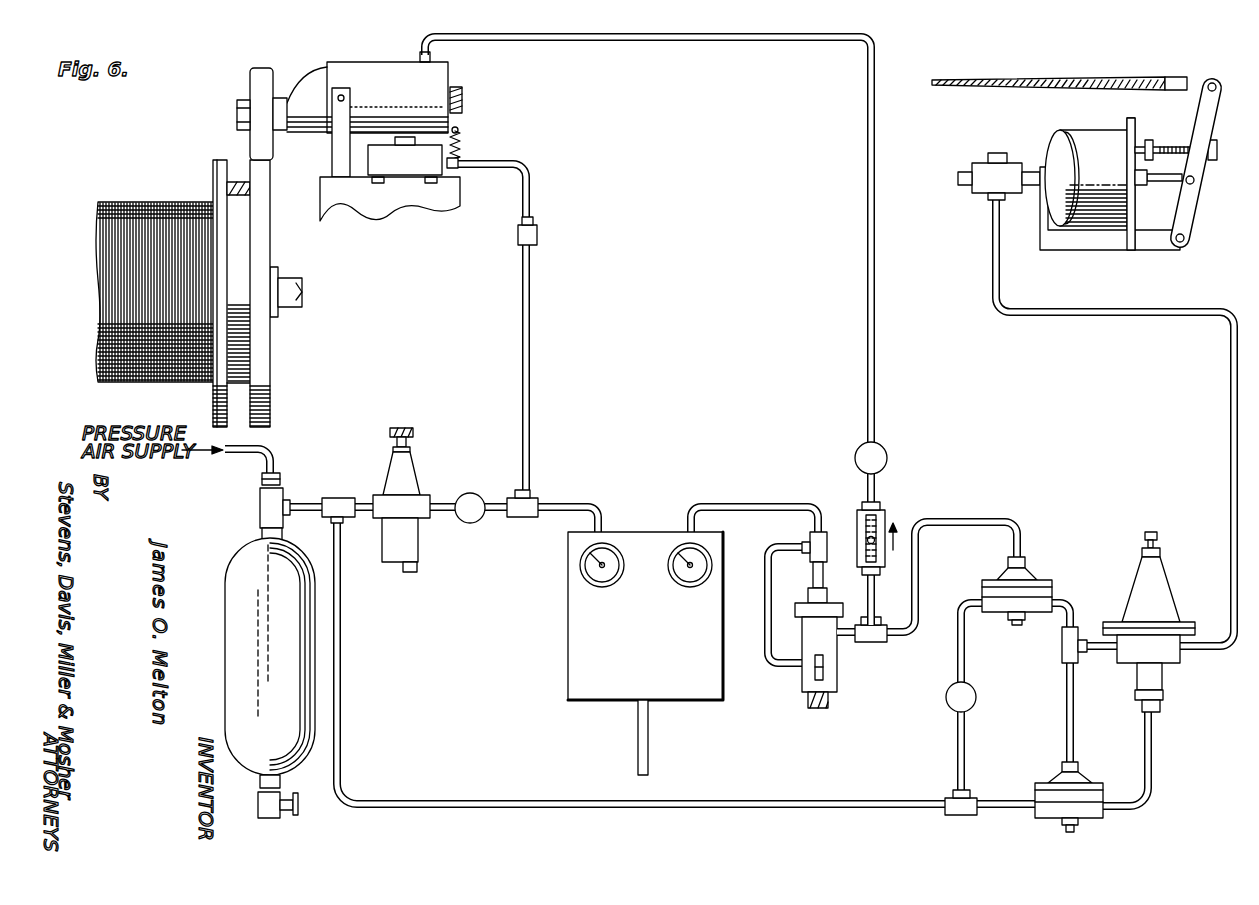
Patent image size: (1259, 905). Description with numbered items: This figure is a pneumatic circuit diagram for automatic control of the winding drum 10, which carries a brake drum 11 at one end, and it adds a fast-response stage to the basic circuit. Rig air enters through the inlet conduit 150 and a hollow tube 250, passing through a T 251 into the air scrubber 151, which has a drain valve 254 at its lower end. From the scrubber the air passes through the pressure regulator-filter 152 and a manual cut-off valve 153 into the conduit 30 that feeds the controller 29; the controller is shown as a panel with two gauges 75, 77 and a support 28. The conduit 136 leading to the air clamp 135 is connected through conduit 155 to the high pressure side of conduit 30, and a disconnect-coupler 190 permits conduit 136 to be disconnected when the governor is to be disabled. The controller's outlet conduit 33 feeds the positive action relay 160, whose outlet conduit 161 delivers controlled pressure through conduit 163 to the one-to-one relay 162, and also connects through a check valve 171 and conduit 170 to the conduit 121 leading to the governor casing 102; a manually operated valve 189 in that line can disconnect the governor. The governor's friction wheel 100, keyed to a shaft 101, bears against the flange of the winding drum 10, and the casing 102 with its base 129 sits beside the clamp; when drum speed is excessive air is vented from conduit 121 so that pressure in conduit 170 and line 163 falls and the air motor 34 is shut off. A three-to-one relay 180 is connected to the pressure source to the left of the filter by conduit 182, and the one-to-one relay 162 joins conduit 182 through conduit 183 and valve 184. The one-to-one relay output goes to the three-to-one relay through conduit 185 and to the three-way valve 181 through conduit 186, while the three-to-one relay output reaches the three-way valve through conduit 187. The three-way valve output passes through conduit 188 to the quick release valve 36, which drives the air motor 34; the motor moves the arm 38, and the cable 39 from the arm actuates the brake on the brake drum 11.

The winding drum 10 is at (163, 200).
The brake drum 11 is at (237, 345).
The friction wheel 100 is at (262, 68).
The shaft 101 is at (237, 116).
The governor casing 102 is at (375, 62).
The conduit 121 is at (468, 43).
The mounting base 129 is at (356, 212).
The air clamp 135 is at (403, 167).
The conduit 136 is at (495, 162).
The disconnect-coupler 190 is at (537, 236).
The conduit 155 is at (534, 336).
The inlet conduit 150 is at (262, 449).
The T 251 is at (262, 505).
The pressure regulator-filter 152 is at (414, 470).
The manual cut-off valve 153 is at (470, 524).
The conduit 30 is at (571, 505).
The outlet conduit 33 is at (772, 505).
The pressure gauge 75 is at (582, 575).
The pressure gauge 77 is at (670, 552).
The controller 29 is at (568, 650).
The panel support 28 is at (638, 750).
The hollow tube 250 is at (275, 615).
The air scrubber 151 is at (303, 703).
The drain valve 254 is at (272, 820).
The conduit 182 is at (655, 808).
The positive action relay 160 is at (800, 677).
The outlet conduit 161 is at (843, 643).
The check valve 171 is at (882, 512).
The conduit 170 is at (868, 300).
The manually operated valve 189 is at (860, 448).
The conduit 163 is at (975, 517).
The one-to-one relay 162 is at (997, 577).
The valve 184 is at (973, 690).
The conduit 185 is at (1067, 715).
The conduit 186 is at (1103, 652).
The three-way valve 181 is at (1168, 580).
The conduit 188 is at (1230, 412).
The conduit 187 is at (1153, 778).
The conduit 183 is at (955, 758).
The three-to-one relay 180 is at (1045, 822).
The air motor 34 is at (1078, 128).
The quick release valve 36 is at (980, 160).
The arm 38 is at (1190, 218).
The cable 39 is at (1050, 80).